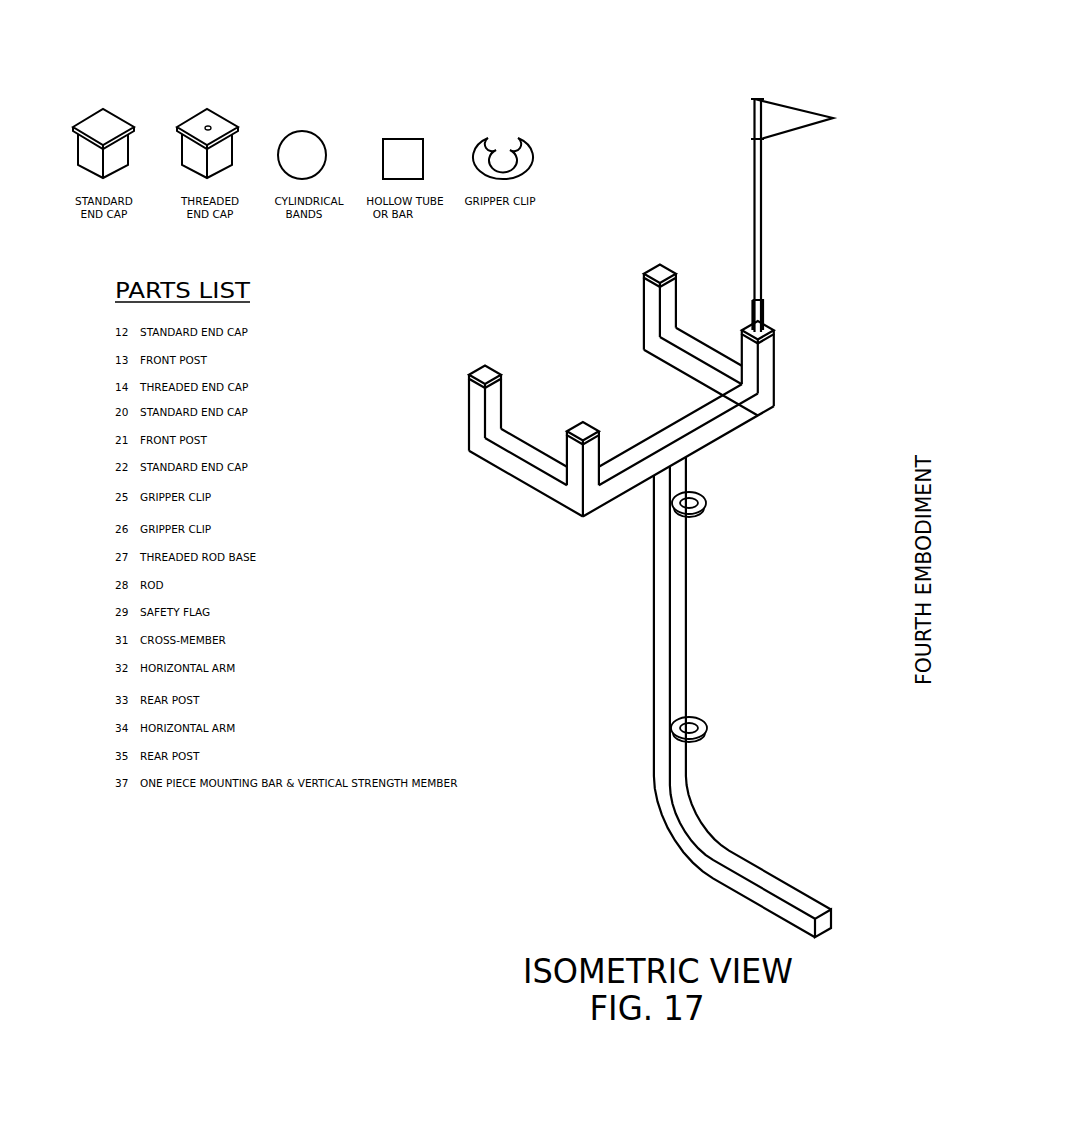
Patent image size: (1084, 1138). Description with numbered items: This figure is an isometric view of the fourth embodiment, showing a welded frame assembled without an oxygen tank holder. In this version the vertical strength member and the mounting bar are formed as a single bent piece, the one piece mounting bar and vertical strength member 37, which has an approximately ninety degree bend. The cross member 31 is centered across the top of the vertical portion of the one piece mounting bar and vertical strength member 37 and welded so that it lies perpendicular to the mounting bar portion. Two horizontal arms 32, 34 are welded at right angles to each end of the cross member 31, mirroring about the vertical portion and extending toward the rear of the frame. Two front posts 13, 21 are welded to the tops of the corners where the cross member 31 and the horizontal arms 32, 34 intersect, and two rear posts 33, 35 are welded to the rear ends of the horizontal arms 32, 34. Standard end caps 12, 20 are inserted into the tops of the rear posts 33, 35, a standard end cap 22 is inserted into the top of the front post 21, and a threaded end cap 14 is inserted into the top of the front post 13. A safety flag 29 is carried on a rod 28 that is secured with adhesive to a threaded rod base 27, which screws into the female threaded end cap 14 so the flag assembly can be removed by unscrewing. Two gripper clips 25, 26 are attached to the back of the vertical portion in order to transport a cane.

The standard end cap 12 is at (648, 267).
The front post 13 is at (777, 362).
The threaded end cap 14 is at (768, 318).
The standard end cap 20 is at (476, 369).
The front post 21 is at (567, 452).
The standard end cap 22 is at (581, 419).
The gripper clip 25 is at (708, 517).
The gripper clip 26 is at (708, 721).
The threaded rod base 27 is at (751, 308).
The rod 28 is at (752, 222).
The safety flag 29 is at (798, 135).
The cross member 31 is at (730, 443).
The horizontal arm 32 is at (521, 484).
The rear post 33 is at (466, 417).
The horizontal arm 34 is at (669, 374).
The rear post 35 is at (646, 311).
The one piece mounting bar and vertical strength member 37 is at (762, 865).